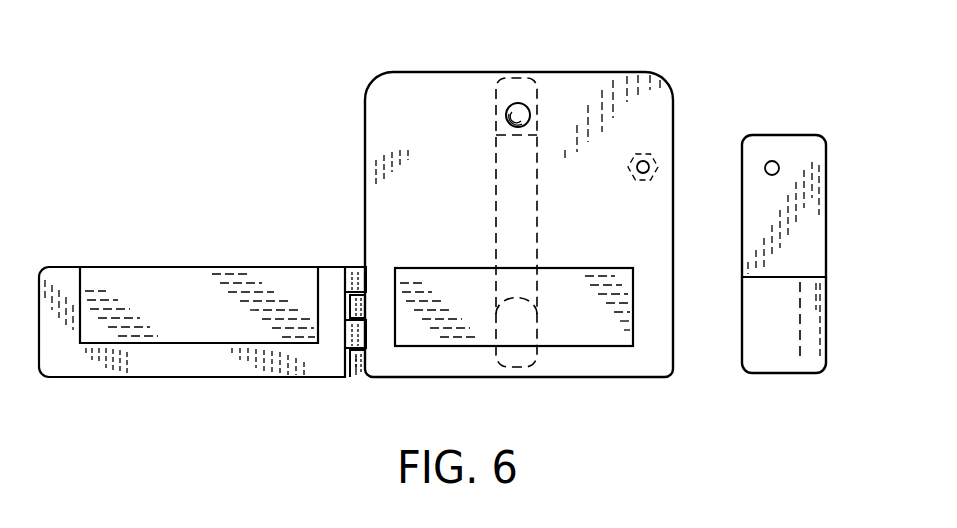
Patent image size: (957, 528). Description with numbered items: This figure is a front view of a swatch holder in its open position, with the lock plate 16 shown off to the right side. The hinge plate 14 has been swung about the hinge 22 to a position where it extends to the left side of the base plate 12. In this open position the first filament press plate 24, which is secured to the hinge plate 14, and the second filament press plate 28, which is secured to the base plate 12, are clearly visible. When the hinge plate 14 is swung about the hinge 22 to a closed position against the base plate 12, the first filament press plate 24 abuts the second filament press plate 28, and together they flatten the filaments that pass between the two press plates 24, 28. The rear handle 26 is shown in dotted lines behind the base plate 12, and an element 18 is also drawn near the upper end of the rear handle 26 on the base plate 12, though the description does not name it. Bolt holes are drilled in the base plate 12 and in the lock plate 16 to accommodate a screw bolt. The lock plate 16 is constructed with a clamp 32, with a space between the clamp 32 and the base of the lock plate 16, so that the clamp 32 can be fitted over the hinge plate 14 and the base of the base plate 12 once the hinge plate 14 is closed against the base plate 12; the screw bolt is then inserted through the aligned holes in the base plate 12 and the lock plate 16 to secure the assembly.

The base plate 12 is at (387, 97).
The hinge plate 14 is at (190, 362).
The lock plate 16 is at (833, 245).
The pin 18 is at (512, 104).
The hinge 22 is at (352, 382).
The first filament press plate 24 is at (151, 284).
The rear handle 26 is at (488, 221).
The second filament press plate 28 is at (571, 291).
The clamp 32 is at (775, 353).